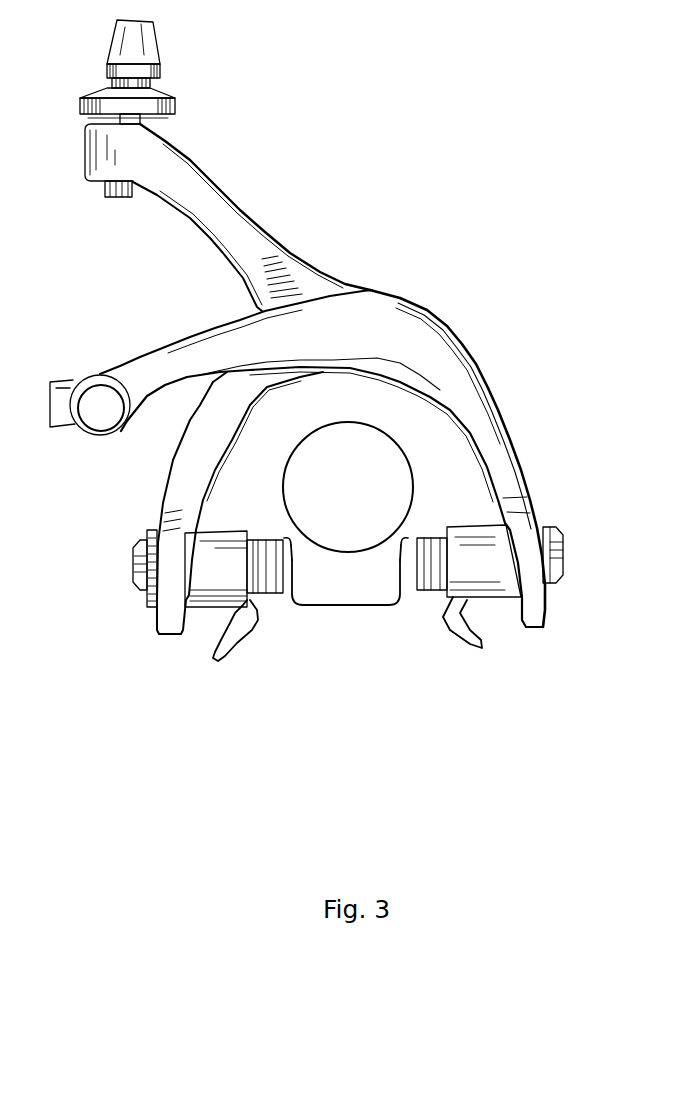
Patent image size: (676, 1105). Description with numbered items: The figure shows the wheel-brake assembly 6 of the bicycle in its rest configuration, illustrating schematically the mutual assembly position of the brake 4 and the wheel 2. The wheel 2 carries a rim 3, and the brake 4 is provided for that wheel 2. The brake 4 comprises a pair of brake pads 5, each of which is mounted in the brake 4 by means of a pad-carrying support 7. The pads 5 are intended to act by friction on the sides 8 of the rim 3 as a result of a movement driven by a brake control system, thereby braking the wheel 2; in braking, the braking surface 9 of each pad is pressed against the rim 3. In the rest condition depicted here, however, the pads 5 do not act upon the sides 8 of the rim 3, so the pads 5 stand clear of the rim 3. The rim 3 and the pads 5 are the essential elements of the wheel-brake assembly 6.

The wheel 2 is at (340, 645).
The rim 3 is at (383, 597).
The brake 4 is at (424, 247).
The brake pad 5 is at (268, 580).
The wheel-brake assembly 6 is at (350, 125).
The pad-carrying support 7 is at (210, 608).
The sides of the rim 8 is at (287, 583).
The braking surface 9 is at (282, 557).